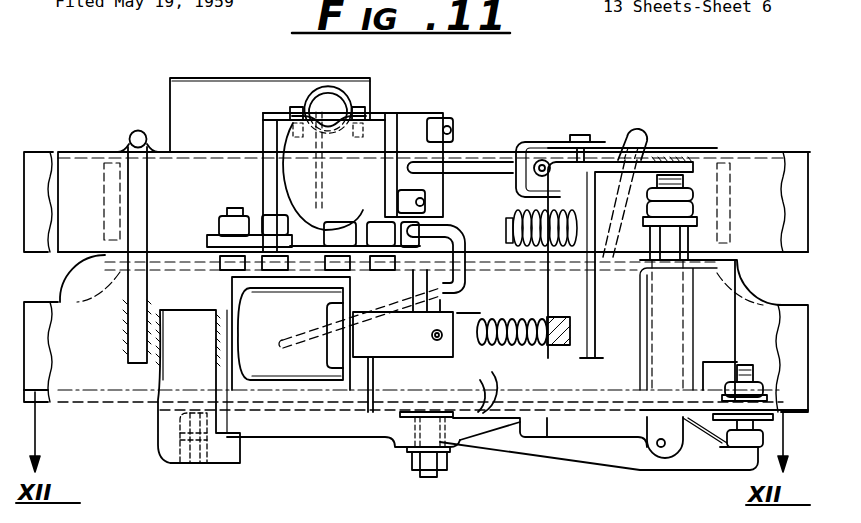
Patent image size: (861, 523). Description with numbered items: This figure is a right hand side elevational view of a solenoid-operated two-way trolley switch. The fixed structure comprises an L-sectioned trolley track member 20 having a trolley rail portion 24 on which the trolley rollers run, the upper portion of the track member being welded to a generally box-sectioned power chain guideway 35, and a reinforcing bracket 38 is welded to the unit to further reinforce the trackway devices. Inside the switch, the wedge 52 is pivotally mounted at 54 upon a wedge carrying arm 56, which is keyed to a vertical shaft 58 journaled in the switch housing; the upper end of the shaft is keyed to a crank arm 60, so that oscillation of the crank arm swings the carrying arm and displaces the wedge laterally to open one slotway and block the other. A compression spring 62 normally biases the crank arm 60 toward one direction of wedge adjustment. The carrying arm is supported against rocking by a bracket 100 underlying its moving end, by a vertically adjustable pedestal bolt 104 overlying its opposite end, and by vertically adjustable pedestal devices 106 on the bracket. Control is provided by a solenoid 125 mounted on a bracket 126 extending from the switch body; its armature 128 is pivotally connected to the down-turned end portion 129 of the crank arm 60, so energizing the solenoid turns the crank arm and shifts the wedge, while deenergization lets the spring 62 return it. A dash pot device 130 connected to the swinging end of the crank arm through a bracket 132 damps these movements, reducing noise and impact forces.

The trolley track member 20 is at (36, 307).
The trolley rail portion 24 is at (100, 396).
The power chain guideway 35 is at (72, 151).
The reinforcing bracket 38 is at (137, 131).
The wedge 52 is at (478, 398).
The pivotal mounting 54 is at (434, 478).
The wedge carrying arm 56 is at (551, 447).
The vertical shaft 58 is at (656, 165).
The crank arm 60 is at (641, 162).
The compression spring 62 is at (538, 224).
The bracket 100 is at (172, 450).
The pedestal bolt 104 is at (744, 361).
The pedestal devices 106 is at (207, 463).
The solenoid 125 is at (480, 317).
The bracket 126 is at (220, 252).
The armature 128 is at (418, 350).
The down-turned end portion 129 is at (568, 299).
The dash pot device 130 is at (372, 116).
The bracket 132 is at (542, 141).